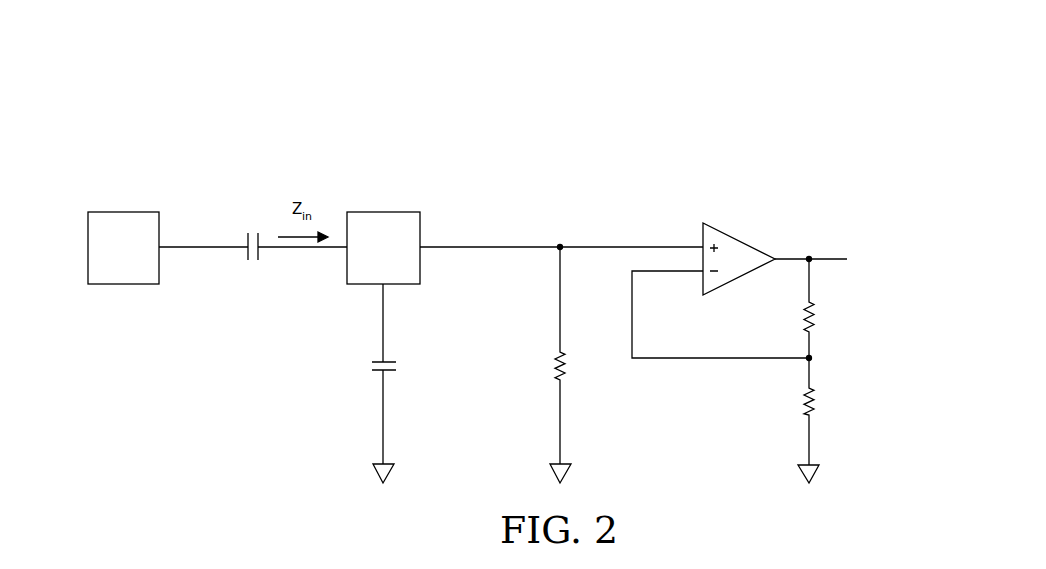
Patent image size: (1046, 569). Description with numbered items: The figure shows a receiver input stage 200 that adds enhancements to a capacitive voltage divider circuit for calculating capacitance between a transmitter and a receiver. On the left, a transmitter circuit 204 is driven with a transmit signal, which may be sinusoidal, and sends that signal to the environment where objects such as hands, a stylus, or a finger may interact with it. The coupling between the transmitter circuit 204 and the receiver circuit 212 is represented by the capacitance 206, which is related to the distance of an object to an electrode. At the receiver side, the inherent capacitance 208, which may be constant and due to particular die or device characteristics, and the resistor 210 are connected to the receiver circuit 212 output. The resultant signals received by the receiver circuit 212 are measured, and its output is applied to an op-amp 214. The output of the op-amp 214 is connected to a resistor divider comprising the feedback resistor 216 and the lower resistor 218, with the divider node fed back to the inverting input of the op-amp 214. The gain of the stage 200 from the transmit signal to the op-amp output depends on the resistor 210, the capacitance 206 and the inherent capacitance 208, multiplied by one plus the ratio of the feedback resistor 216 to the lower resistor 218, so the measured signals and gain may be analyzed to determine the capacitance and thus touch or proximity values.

The receiver input stage 200 is at (298, 92).
The transmitter circuit 204 is at (122, 212).
The capacitance C 206 is at (251, 264).
The inherent capacitance C0 208 is at (372, 364).
The resistor R 210 is at (553, 358).
The receiver circuit 212 is at (372, 212).
The op-amp 214 is at (764, 222).
The feedback resistor Rf 216 is at (802, 316).
The resistor R1 218 is at (804, 397).